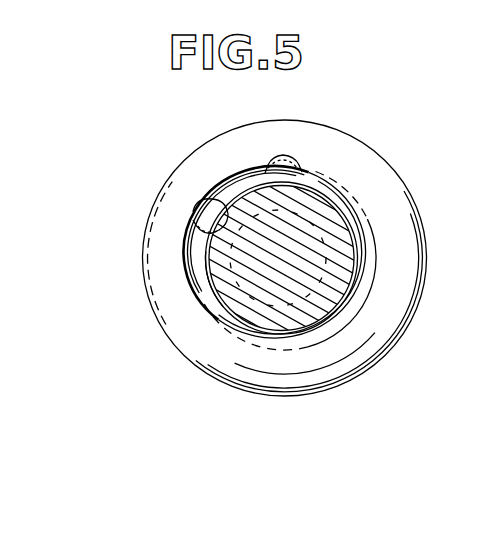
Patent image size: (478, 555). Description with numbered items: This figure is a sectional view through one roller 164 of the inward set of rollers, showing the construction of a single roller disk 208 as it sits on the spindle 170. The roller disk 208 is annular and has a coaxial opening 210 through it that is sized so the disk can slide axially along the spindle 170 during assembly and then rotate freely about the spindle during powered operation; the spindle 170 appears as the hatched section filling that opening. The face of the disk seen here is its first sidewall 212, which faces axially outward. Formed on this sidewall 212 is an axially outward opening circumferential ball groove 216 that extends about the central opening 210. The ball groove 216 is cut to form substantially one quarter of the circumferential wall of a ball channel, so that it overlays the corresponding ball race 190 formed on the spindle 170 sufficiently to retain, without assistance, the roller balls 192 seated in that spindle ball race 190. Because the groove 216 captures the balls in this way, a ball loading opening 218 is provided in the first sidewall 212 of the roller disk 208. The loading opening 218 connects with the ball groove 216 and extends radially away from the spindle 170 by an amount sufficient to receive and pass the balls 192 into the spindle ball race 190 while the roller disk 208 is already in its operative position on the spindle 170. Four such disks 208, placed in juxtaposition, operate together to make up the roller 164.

The roller 164 is at (180, 168).
The spindle 170 is at (232, 300).
The spindle ball race 190 is at (173, 275).
The roller balls 192 is at (193, 213).
The roller disk 208 is at (348, 172).
The coaxial opening 210 is at (260, 323).
The first sidewall 212 is at (378, 197).
The ball groove 216 is at (368, 233).
The ball loading opening 218 is at (285, 158).